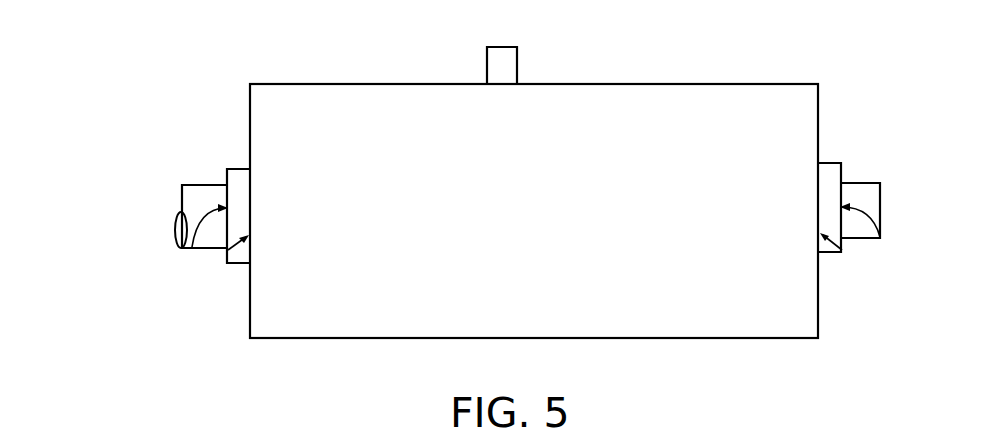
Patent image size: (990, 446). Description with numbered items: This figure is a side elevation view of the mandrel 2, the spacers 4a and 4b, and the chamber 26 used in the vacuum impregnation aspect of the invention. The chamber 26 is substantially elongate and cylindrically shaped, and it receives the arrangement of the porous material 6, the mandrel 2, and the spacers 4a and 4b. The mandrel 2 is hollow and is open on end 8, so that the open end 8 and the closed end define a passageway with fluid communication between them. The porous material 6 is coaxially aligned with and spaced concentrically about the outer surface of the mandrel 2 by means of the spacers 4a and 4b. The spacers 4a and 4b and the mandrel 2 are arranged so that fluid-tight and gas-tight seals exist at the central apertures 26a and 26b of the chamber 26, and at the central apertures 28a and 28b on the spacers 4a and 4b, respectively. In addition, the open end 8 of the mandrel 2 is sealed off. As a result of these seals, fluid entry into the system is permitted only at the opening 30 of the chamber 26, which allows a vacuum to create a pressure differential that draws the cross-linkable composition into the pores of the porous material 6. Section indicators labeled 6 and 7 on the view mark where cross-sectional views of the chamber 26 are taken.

The mandrel 2 is at (206, 184).
The spacer 4a is at (238, 168).
The spacer 4b is at (830, 162).
The porous material 6 is at (180, 211).
The section line 7 is at (503, 45).
The open end 8 is at (176, 232).
The chamber 26 is at (625, 84).
The central aperture 26a is at (228, 250).
The central aperture 26b is at (842, 253).
The central aperture 28a is at (187, 249).
The central aperture 28b is at (880, 239).
The opening 30 is at (508, 47).